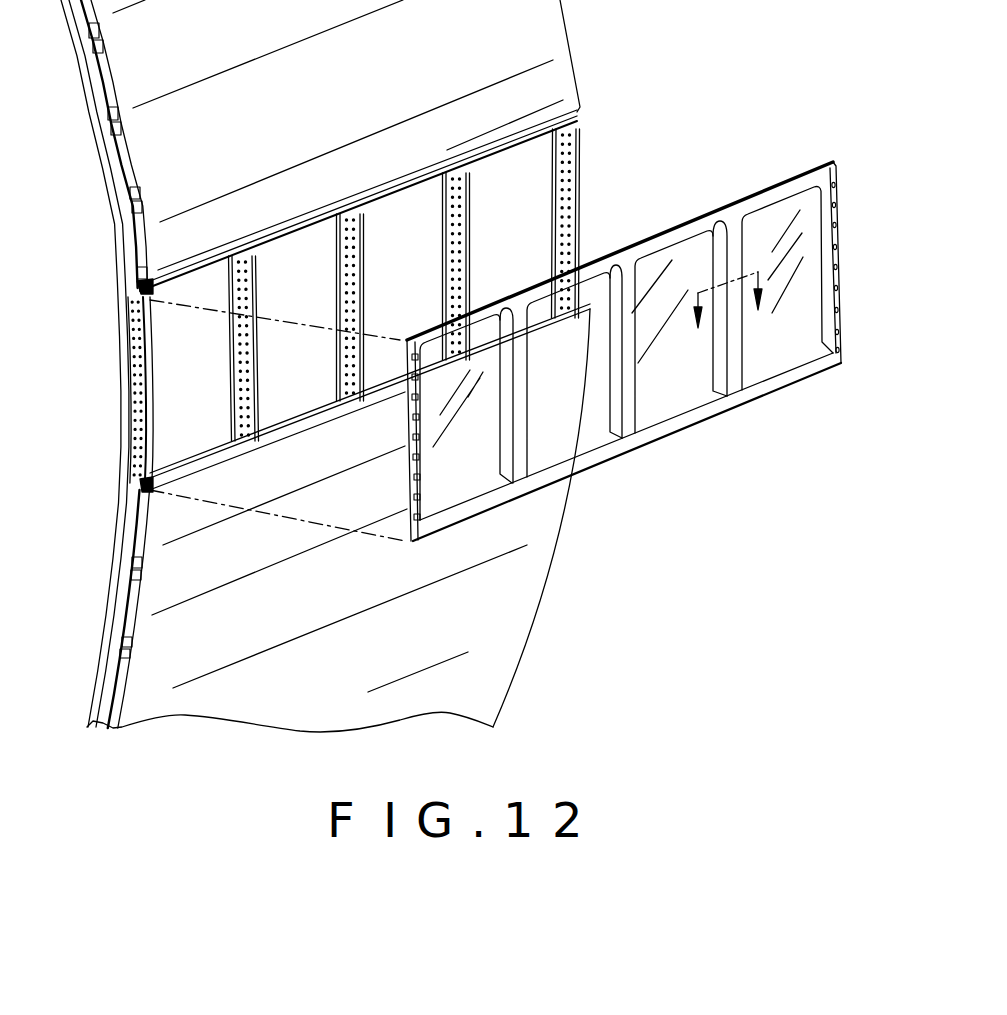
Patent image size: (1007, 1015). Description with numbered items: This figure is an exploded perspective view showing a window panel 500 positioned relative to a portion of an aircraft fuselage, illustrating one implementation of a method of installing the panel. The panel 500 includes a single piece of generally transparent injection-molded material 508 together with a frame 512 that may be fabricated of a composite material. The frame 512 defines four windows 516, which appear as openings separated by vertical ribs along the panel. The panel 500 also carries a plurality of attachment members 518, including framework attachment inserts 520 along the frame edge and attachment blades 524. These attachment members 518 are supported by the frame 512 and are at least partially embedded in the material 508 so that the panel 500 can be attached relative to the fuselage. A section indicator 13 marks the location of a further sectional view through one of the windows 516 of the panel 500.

The window panel 500 is at (683, 430).
The generally transparent injection-molded material 508 is at (690, 388).
The frame 512 is at (780, 388).
The windows 516 is at (787, 212).
The attachment members 518 is at (841, 265).
The framework attachment inserts 520 is at (841, 183).
The attachment blades 524 is at (723, 257).
The section line 13- 13 is at (733, 313).